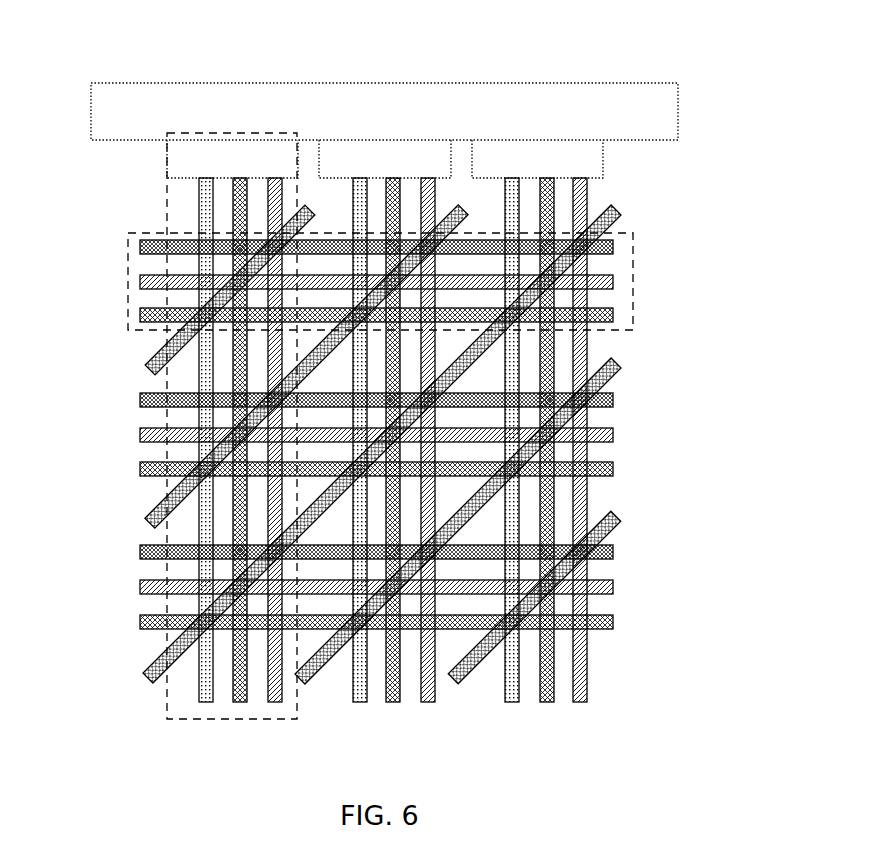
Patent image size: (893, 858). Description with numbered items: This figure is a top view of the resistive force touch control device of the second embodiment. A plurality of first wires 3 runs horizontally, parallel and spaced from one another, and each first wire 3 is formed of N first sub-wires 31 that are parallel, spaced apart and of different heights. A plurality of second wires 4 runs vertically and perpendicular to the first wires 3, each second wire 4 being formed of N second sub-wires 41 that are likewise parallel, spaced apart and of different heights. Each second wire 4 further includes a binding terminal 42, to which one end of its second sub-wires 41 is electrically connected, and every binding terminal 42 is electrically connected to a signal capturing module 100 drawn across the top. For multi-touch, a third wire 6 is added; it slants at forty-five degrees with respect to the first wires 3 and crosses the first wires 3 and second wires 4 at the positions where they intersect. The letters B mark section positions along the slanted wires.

The signal capturing module 100 is at (468, 107).
The binding terminal 42 is at (247, 160).
The second wire 4 is at (237, 720).
The first wire 3 is at (344, 277).
The first sub-wire 31 is at (140, 247).
The second sub-wire 41 is at (150, 372).
The third wire 6 is at (148, 518).
The section line B is at (607, 232).